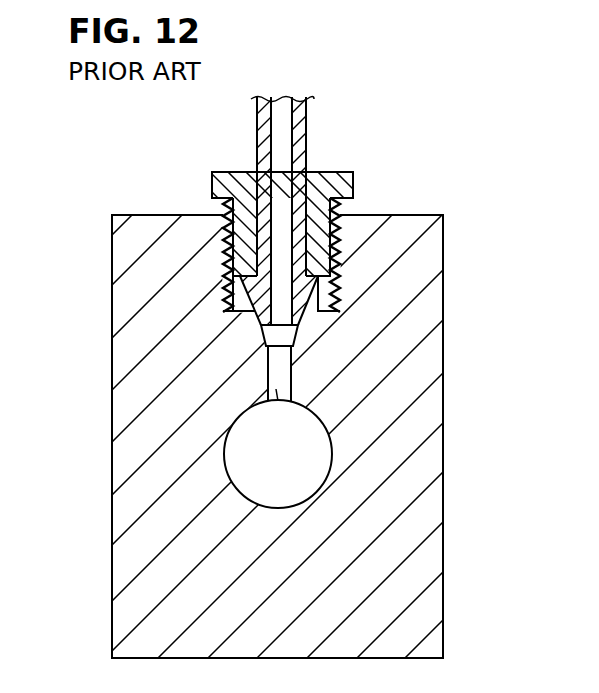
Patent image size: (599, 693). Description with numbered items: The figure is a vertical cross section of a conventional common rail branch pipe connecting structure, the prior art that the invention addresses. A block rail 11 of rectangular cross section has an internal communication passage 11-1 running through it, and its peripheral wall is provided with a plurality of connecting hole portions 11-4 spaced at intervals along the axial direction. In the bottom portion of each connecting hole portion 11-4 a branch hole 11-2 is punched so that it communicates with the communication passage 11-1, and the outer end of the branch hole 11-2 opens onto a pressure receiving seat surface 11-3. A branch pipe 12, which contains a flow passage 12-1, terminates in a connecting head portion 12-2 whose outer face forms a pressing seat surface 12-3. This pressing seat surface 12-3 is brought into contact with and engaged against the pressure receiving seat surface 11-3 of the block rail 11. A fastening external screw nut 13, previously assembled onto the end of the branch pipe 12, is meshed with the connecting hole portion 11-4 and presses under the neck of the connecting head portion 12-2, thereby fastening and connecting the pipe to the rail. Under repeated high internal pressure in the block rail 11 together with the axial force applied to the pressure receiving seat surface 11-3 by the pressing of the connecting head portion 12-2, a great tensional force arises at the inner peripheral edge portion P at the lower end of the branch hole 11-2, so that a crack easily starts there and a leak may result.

The block rail 11 is at (428, 405).
The communication passage 11-1 is at (332, 466).
The branch hole 11-2 is at (268, 399).
The pressure receiving seat surface 11-3 is at (291, 334).
The connecting hole portion 11-4 is at (231, 240).
The branch pipe 12 is at (306, 129).
The flow passage 12-1 is at (282, 98).
The connecting head portion 12-2 is at (333, 277).
The pressing seat surface 12-3 is at (320, 302).
The fastening external screw nut 13 is at (353, 181).
The inner peripheral edge portion P is at (278, 392).